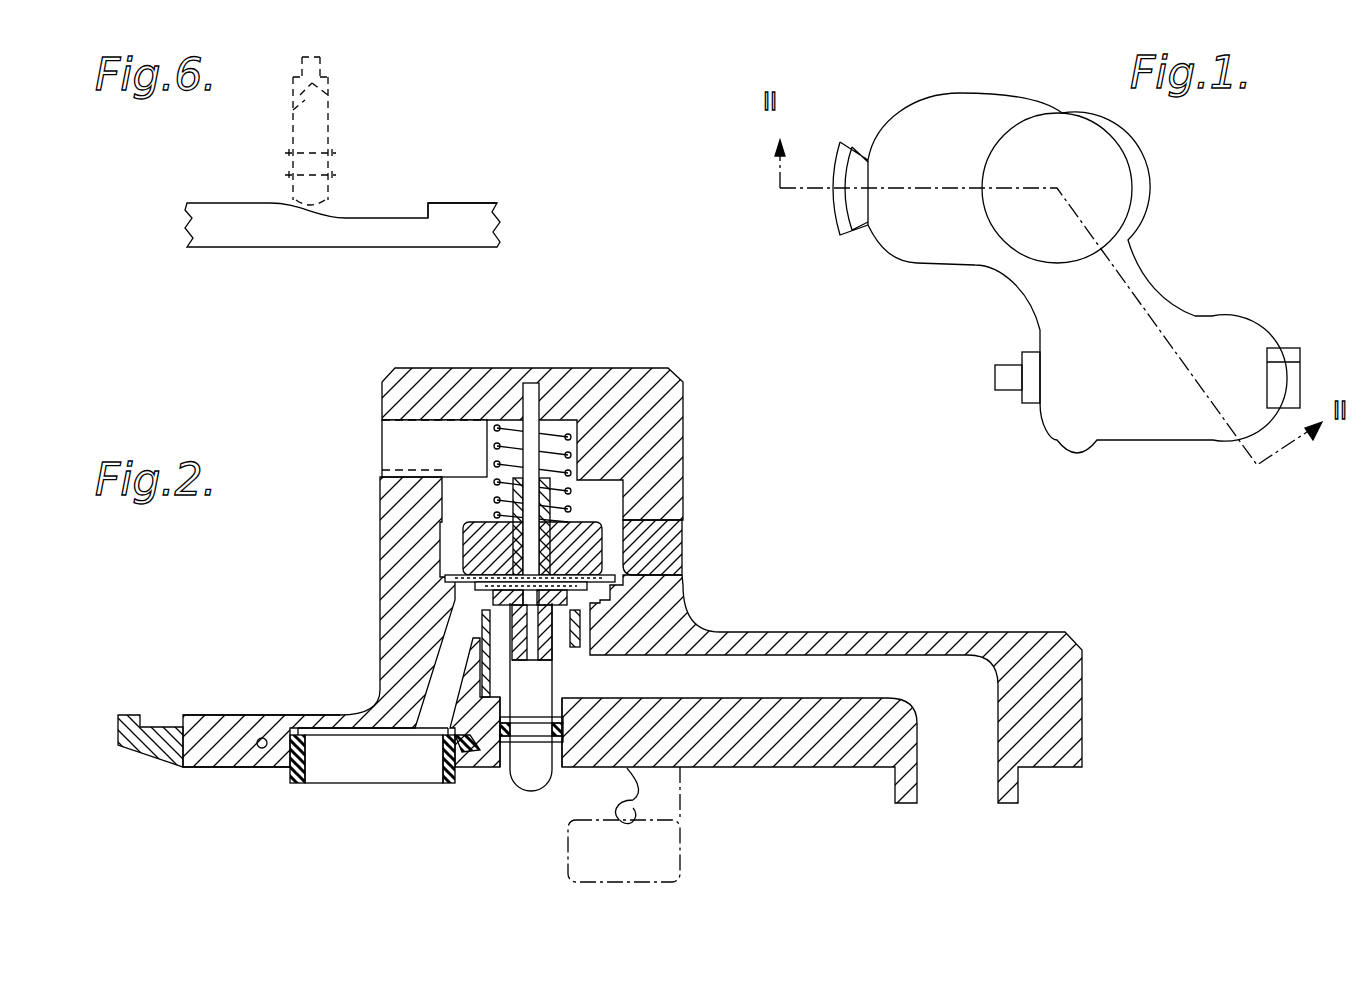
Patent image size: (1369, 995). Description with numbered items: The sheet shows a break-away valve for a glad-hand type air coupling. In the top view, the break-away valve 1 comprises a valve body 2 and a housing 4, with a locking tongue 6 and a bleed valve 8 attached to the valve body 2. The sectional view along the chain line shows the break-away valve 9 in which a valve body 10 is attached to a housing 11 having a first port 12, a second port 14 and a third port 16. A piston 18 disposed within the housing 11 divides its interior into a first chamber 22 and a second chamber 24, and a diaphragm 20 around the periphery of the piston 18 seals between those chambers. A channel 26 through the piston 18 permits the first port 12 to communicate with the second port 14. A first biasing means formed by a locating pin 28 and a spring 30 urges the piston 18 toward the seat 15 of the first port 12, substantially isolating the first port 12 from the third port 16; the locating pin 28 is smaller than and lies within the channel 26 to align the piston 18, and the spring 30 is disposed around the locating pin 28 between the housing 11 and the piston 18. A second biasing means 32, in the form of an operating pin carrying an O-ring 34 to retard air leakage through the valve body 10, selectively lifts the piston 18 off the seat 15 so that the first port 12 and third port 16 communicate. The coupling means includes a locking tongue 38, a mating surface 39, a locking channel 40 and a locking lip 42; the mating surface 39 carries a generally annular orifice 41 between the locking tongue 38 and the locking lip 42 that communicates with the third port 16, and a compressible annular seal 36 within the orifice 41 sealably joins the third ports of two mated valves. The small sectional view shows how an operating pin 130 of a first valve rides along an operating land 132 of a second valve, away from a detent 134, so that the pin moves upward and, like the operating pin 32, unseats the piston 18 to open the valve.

In FIG. 1, the break-away valve 1 is at (1255, 190).
In FIG. 1, the valve body 2 is at (1145, 275).
In FIG. 1, the housing 4 is at (1090, 140).
In FIG. 1, the locking tongue 6 is at (840, 235).
In FIG. 1, the bleed valve 8 is at (1022, 395).
In FIG. 2, the break-away valve 9 is at (758, 508).
In FIG. 2, the valve body 10 is at (950, 632).
In FIG. 2, the housing 11 is at (683, 400).
In FIG. 2, the first port 12 is at (960, 803).
In FIG. 2, the second port 14 is at (410, 455).
In FIG. 2, the seat 15 is at (478, 620).
In FIG. 2, the third port 16 is at (440, 657).
In FIG. 2, the piston 18 is at (590, 518).
In FIG. 2, the diaphragm 20 is at (450, 548).
In FIG. 2, the first chamber 22 is at (460, 497).
In FIG. 2, the second chamber 24 is at (450, 597).
In FIG. 2, the channel 26 is at (600, 565).
In FIG. 2, the locating pin 28 is at (535, 405).
In FIG. 2, the spring 30 is at (585, 452).
In FIG. 2, the second biasing means 32 is at (535, 680).
In FIG. 2, the O-ring 34 is at (570, 728).
In FIG. 2, the compressible annular seal 36 is at (298, 783).
In FIG. 2, the locking tongue 38 is at (125, 715).
In FIG. 2, the mating surface 39 is at (225, 768).
In FIG. 2, the locking channel 40 is at (633, 800).
In FIG. 2, the annular orifice 41 is at (478, 770).
In FIG. 2, the locking lip 42 is at (680, 840).
In FIG. 6, the operating pin 130 is at (320, 126).
In FIG. 6, the operating land 132 is at (235, 203).
In FIG. 6, the detent 134 is at (420, 203).